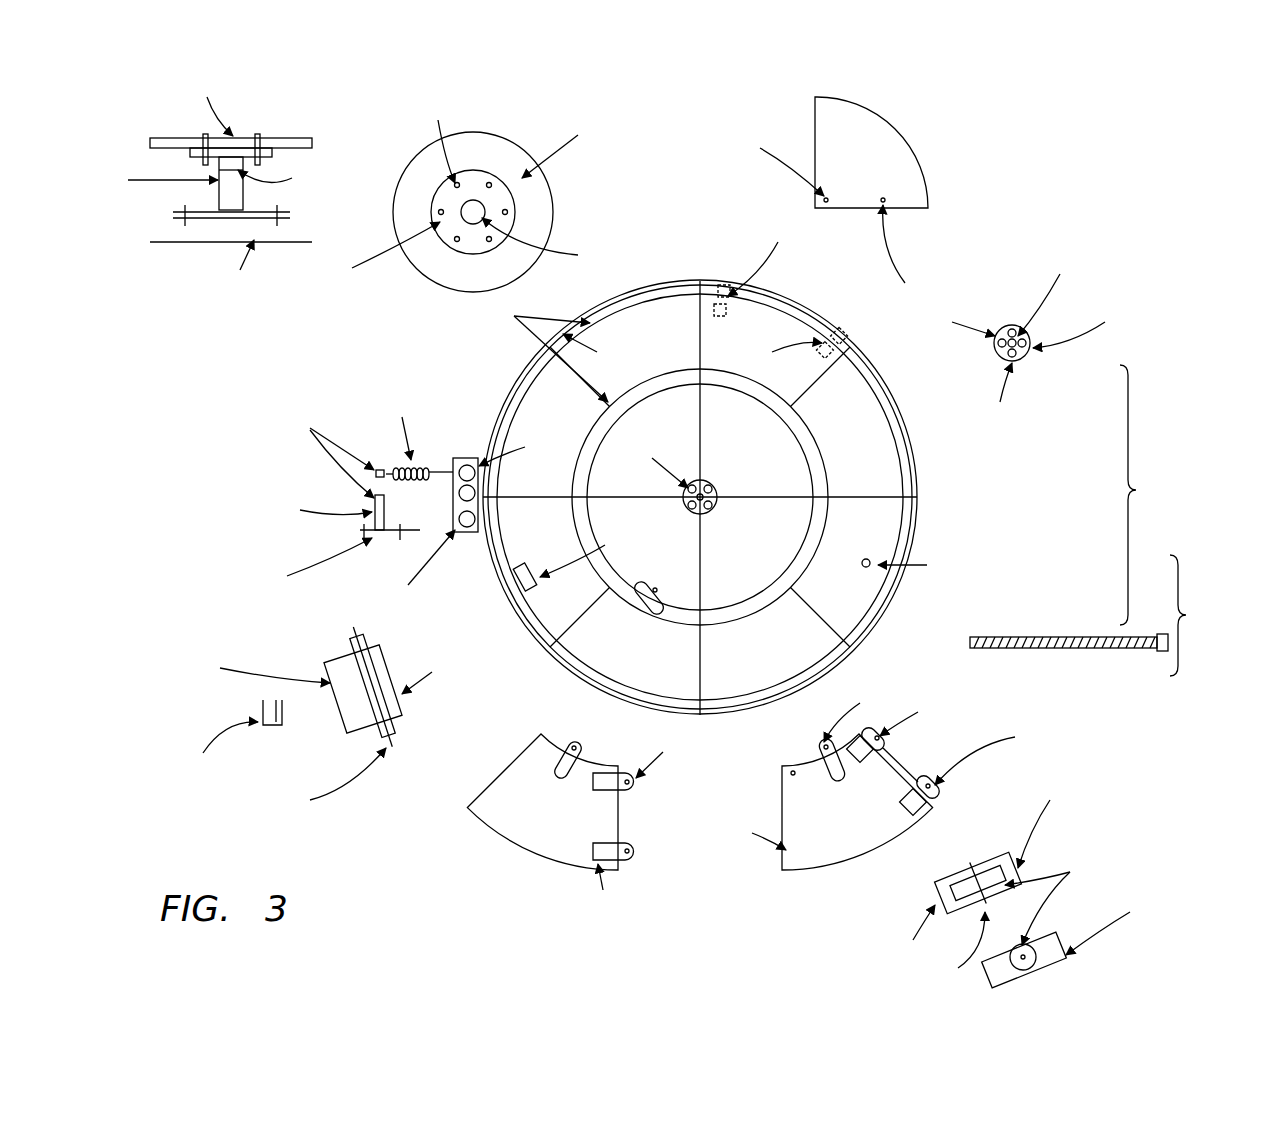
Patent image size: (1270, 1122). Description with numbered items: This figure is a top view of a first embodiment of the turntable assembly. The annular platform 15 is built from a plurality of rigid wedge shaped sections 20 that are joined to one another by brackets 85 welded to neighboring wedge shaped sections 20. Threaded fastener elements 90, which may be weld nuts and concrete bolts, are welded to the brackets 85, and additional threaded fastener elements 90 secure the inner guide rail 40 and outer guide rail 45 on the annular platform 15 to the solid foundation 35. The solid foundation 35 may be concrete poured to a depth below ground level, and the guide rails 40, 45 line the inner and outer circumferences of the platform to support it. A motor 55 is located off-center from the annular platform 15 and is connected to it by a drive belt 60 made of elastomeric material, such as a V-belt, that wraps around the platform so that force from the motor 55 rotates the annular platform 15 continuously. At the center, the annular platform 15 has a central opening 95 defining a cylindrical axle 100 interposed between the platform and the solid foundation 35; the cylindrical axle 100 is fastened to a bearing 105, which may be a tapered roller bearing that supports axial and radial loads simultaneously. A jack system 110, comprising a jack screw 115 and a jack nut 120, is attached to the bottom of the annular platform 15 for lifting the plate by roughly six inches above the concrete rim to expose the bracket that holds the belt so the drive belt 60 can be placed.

The annular platform 15 is at (1060, 438).
The rigid wedge shaped sections 20 is at (902, 165).
The solid foundation 35 is at (432, 191).
The inner guide rail 40 is at (695, 497).
The outer guide rail 45 is at (622, 320).
The motor 55 is at (481, 488).
The drive belt 60 is at (741, 497).
The brackets 85 is at (512, 580).
The threaded fastener elements 90 is at (650, 786).
The central opening 95 is at (716, 505).
The cylindrical axle 100 is at (218, 187).
The bearing 105 is at (478, 226).
The jack system 110 is at (1102, 645).
The jack screw 115 is at (1146, 650).
The jack nut 120 is at (868, 572).